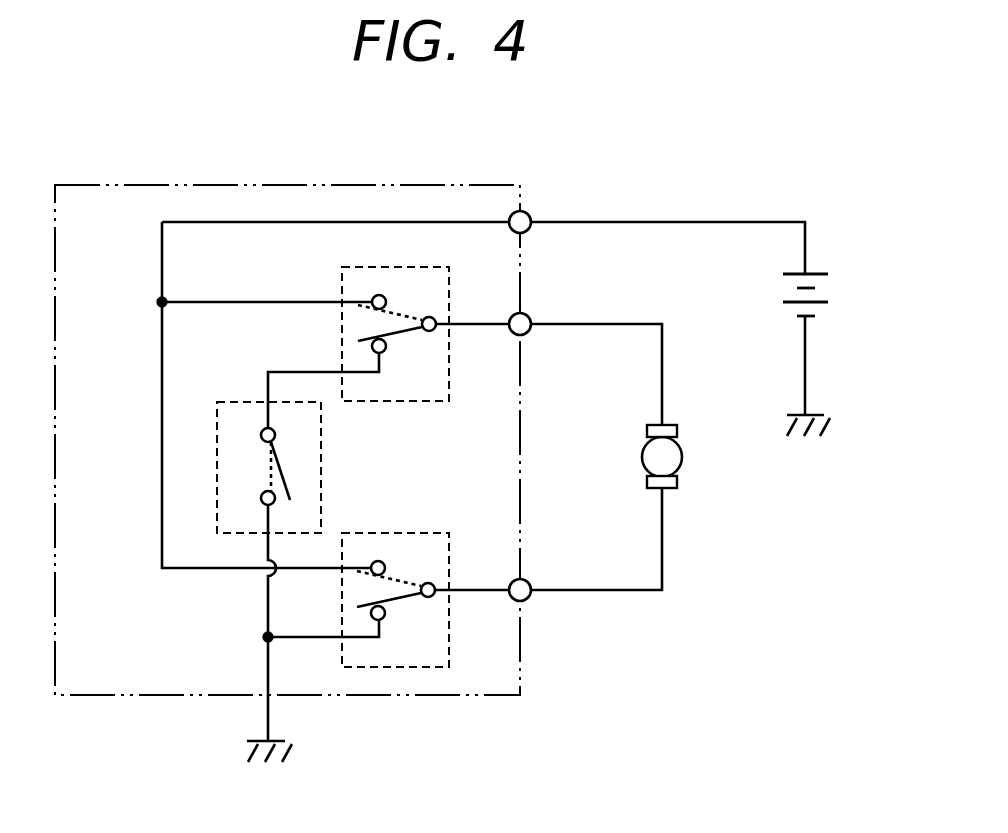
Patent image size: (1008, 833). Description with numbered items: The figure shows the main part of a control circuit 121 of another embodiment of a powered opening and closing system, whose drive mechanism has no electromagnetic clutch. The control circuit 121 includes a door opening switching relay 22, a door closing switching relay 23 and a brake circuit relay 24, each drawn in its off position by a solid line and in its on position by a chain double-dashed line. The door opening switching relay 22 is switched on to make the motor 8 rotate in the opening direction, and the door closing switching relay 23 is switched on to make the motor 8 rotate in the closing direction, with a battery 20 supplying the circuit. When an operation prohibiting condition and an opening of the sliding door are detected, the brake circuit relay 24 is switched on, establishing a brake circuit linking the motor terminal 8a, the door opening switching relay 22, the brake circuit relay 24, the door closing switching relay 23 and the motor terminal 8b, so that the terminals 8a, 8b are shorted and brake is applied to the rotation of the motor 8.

The control circuit 121 is at (186, 185).
The door opening switching relay 22 is at (342, 277).
The door closing switching relay 23 is at (437, 533).
The brake circuit relay 24 is at (322, 460).
The battery 20 is at (826, 283).
The motor 8 is at (696, 457).
The motor terminal 8a is at (670, 423).
The motor terminal 8b is at (670, 492).